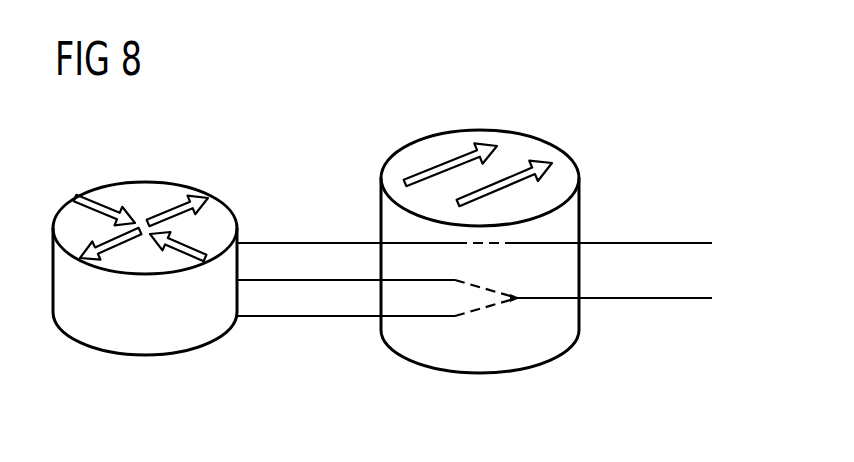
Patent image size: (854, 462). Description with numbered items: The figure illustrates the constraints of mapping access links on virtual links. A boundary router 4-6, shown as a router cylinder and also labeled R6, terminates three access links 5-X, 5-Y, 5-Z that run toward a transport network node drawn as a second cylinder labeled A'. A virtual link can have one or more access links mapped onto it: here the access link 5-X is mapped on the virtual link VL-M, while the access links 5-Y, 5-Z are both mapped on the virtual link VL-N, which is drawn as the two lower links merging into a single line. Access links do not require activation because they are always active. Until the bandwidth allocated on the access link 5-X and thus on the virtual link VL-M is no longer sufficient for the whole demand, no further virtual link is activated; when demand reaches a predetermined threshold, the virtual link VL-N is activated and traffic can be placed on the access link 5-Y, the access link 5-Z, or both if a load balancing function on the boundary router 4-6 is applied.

The boundary router 4-6 is at (145, 182).
The router R6 is at (153, 383).
The aggregated link / node A' is at (480, 273).
The access link 5-X is at (347, 229).
The access link 5-Y is at (377, 274).
The access link 5-Z is at (377, 301).
The virtual link VL-M is at (584, 228).
The virtual link VL-N is at (611, 286).